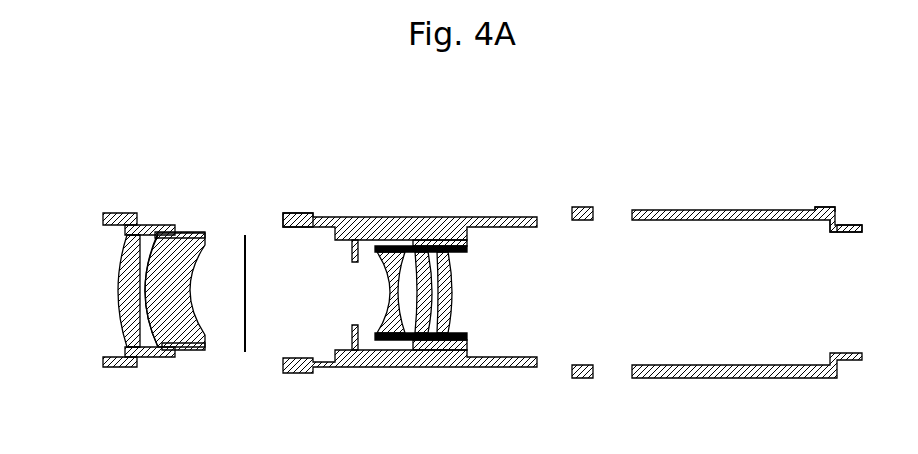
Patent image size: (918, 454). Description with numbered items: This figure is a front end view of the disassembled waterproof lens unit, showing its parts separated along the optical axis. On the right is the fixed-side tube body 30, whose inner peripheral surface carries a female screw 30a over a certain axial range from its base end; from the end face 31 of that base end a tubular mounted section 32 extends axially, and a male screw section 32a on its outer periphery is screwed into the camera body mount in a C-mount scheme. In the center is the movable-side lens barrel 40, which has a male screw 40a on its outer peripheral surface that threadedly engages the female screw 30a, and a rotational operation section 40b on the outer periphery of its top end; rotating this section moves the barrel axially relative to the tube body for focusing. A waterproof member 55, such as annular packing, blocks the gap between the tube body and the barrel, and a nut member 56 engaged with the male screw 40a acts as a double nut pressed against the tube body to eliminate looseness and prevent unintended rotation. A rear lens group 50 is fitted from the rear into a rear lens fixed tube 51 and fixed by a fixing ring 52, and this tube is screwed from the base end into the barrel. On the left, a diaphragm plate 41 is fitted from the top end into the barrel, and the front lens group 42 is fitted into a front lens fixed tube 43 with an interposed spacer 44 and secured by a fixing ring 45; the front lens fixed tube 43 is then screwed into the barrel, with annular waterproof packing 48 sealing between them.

The fixed-side tube body 30 is at (730, 209).
The female screw 30a is at (777, 365).
The end face 31 is at (836, 210).
The mounted section 32 is at (843, 233).
The male screw section 32a is at (852, 226).
The movable-side lens barrel 40 is at (496, 213).
The male screw 40a is at (470, 368).
The rotational operation section 40b is at (300, 213).
The diaphragm plate 41 is at (245, 350).
The front lens group 42 is at (128, 293).
The front lens fixed tube 43 is at (173, 222).
The spacer 44 is at (140, 345).
The fixing ring 45 is at (127, 233).
The waterproof packing 48 is at (142, 366).
The rear lens group 50 is at (452, 300).
The rear lens fixed tube 51 is at (468, 345).
The fixing ring 52 is at (457, 335).
The waterproof member 55 is at (430, 217).
The nut member 56 is at (585, 207).